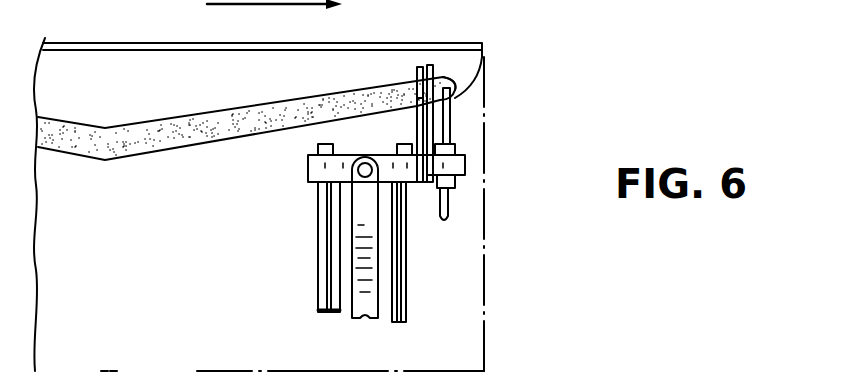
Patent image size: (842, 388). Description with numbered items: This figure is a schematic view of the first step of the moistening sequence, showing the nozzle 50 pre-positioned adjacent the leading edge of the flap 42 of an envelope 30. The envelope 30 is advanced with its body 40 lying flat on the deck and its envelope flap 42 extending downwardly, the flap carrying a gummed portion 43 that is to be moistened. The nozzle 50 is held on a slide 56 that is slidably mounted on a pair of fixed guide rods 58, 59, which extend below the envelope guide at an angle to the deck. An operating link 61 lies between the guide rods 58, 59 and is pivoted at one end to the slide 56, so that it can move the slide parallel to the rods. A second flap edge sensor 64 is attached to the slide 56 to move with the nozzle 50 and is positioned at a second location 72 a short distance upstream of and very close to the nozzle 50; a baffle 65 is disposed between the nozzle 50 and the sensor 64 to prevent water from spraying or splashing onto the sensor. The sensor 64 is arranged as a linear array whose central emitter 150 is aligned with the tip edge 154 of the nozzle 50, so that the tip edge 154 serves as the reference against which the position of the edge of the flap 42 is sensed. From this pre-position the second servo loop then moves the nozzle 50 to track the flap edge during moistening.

The envelope 30 is at (520, 334).
The body of the envelope 40 is at (480, 246).
The envelope flap 42 is at (144, 62).
The gummed portion 43 is at (172, 142).
The nozzle 50 is at (472, 124).
The slide 56 is at (310, 172).
The guide rod 58 is at (318, 253).
The guide rod 59 is at (408, 262).
The operating link 61 is at (368, 312).
The second flap edge sensor 64 is at (388, 70).
The baffle 65 is at (432, 62).
The second location 72 is at (425, 57).
The central emitter 150 is at (415, 98).
The tip edge 154 is at (458, 92).